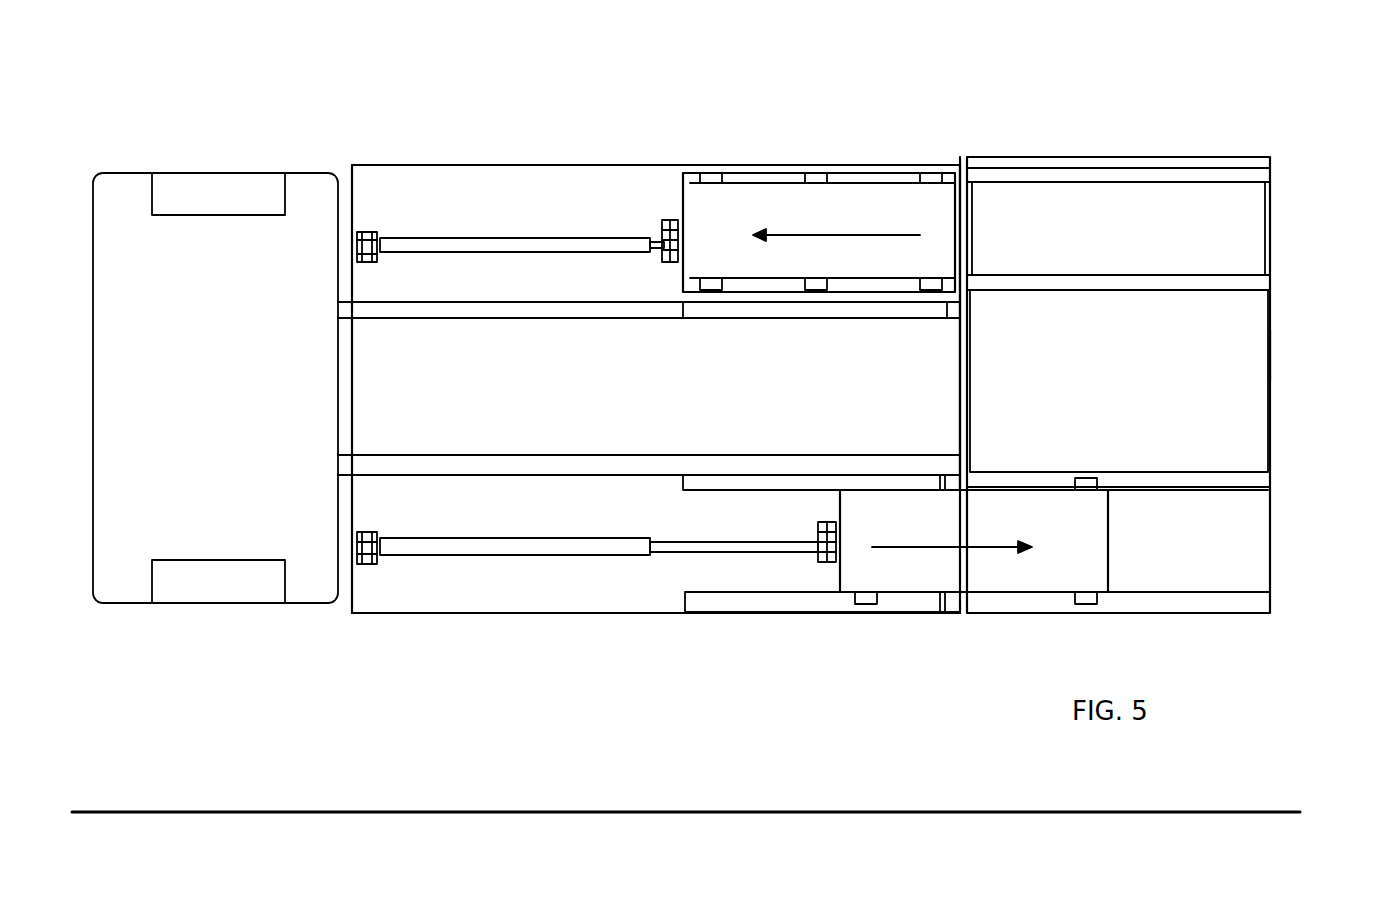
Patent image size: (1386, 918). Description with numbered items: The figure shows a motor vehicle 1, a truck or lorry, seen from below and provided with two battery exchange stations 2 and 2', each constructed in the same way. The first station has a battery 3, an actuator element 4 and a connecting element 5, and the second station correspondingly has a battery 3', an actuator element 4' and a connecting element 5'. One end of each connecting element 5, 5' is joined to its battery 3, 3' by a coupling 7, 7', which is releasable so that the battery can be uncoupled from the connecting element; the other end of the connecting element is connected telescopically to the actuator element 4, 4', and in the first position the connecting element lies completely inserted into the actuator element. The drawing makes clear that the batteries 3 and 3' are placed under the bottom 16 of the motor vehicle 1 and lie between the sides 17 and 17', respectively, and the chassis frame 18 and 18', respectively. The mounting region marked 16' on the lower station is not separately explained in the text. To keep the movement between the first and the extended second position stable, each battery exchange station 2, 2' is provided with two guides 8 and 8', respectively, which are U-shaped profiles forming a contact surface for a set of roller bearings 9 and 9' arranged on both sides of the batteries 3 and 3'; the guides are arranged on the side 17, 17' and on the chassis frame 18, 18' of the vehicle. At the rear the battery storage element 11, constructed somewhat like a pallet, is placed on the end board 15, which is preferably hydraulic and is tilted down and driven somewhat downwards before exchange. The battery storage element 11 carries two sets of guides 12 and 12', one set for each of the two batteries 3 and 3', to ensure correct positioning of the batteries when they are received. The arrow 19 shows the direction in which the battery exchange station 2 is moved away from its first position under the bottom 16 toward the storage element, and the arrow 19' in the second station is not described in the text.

The motor vehicle 1 is at (312, 158).
The battery exchange station 2 is at (656, 136).
The second battery exchange station 2' is at (516, 660).
The battery 3 is at (819, 191).
The second battery 3' is at (974, 598).
The actuator element 4 is at (515, 173).
The second actuator element 4' is at (511, 621).
The connecting element 5 is at (663, 171).
The second connecting element 5' is at (731, 626).
The coupling 7 is at (691, 176).
The second coupling 7' is at (815, 618).
The guide 8 is at (819, 237).
The second guide 8' is at (814, 557).
The roller bearings 9 is at (821, 240).
The second roller bearings 9' is at (976, 551).
The battery storage element 11 is at (1108, 389).
The guide 12 is at (1118, 230).
The second guide 12' is at (1118, 548).
The end board 15 is at (1280, 360).
The bottom 16 is at (390, 229).
The second cylinder mount 16' is at (432, 531).
The side 17 is at (656, 316).
The second side 17' is at (656, 665).
The chassis frame 18 is at (649, 341).
The second chassis frame 18' is at (649, 438).
The arrow 19 is at (873, 160).
The second direction of movement 19' is at (952, 657).